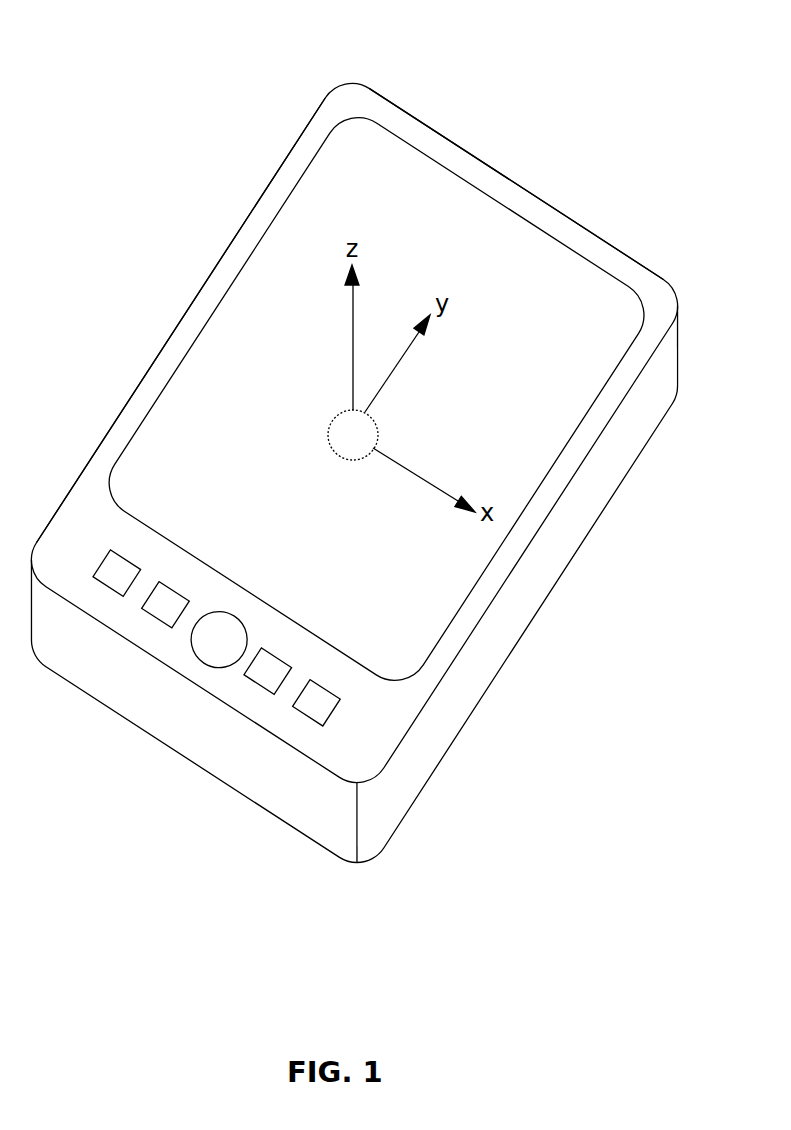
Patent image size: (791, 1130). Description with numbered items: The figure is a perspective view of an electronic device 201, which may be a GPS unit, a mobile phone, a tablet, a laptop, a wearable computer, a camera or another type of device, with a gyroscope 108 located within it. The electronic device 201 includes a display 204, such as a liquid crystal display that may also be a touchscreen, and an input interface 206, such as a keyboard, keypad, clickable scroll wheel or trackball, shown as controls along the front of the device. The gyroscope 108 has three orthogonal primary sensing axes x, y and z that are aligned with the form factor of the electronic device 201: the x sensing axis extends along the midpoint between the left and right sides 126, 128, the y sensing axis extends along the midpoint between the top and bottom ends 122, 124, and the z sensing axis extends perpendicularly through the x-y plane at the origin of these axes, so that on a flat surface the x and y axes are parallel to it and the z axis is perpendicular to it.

The electronic device 201 is at (418, 145).
The display 204 is at (247, 262).
The top end 122 is at (547, 207).
The left side 126 is at (170, 335).
The bottom end 124 is at (158, 742).
The right side 128 is at (578, 545).
The input interface 206 is at (110, 591).
The gyroscope 108 is at (328, 433).